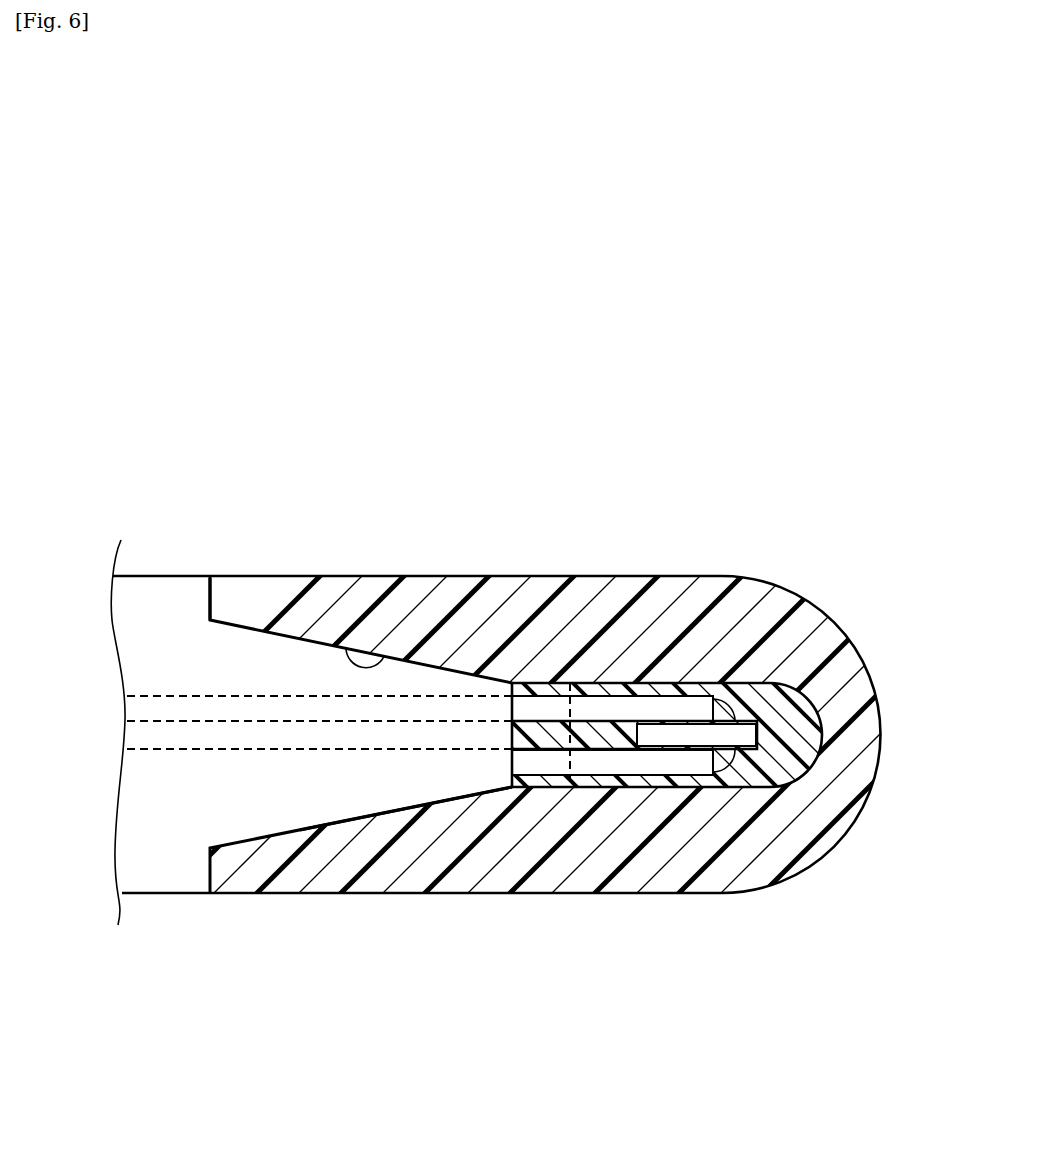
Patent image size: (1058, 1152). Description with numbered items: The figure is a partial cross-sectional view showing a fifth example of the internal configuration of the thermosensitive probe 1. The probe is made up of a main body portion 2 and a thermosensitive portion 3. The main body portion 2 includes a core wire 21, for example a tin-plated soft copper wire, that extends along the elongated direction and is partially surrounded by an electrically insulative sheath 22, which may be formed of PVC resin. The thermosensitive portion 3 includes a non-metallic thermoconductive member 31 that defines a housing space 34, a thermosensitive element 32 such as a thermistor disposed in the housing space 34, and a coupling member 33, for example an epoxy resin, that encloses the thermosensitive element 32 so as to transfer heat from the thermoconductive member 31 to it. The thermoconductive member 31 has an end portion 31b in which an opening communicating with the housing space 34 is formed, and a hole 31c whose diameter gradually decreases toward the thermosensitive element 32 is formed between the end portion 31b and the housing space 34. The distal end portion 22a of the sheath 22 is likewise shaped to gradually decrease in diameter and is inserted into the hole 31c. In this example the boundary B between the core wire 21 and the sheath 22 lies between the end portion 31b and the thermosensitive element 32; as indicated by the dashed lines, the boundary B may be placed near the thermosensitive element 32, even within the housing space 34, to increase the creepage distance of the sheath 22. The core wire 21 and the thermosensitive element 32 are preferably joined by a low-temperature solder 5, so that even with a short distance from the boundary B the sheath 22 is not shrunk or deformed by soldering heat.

The thermosensitive probe 1 is at (489, 386).
The main body portion 2 is at (126, 468).
The thermosensitive portion 3 is at (738, 483).
The low-temperature solder 5 is at (796, 684).
The core wire 21 is at (147, 706).
The sheath 22 is at (177, 875).
The distal end portion 22a is at (402, 812).
The thermoconductive member 31 is at (665, 576).
The end portion 31b is at (195, 576).
The hole 31c is at (373, 655).
The thermosensitive element 32 is at (678, 740).
The coupling member 33 is at (800, 735).
The housing space 34 is at (778, 776).
The boundary B is at (543, 762).